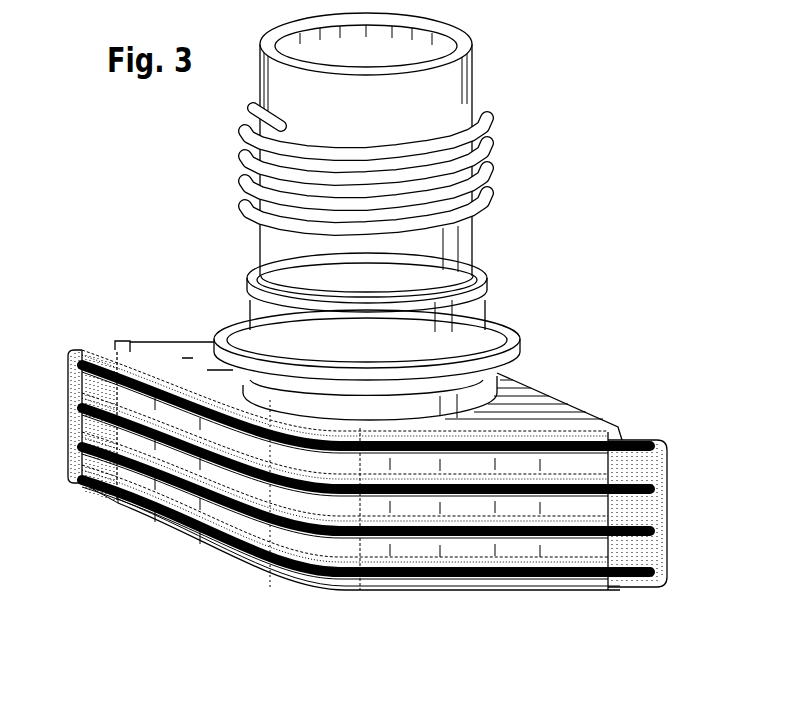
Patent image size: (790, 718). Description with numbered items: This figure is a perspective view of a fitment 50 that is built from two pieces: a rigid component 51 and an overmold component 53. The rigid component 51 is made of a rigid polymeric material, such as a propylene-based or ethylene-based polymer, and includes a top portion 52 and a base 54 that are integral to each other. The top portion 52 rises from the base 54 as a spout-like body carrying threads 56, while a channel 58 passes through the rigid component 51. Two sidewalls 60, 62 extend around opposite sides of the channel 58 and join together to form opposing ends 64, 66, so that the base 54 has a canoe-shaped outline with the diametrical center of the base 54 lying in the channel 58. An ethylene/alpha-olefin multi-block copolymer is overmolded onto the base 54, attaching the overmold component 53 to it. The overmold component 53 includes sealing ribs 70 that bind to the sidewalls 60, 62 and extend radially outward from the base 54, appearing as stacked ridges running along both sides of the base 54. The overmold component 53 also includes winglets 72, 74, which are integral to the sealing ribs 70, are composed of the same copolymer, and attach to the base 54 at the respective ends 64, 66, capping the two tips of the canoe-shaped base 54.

The fitment 50 is at (555, 152).
The rigid component 51 is at (535, 262).
The top portion 52 is at (488, 220).
The overmold component 53 is at (628, 430).
The base 54 is at (593, 392).
The threads 56 is at (237, 125).
The channel 58 is at (405, 50).
The sidewall 60 is at (127, 340).
The sidewall 62 is at (178, 340).
The end 64 is at (50, 477).
The end 66 is at (682, 567).
The sealing ribs 70 is at (533, 440).
The winglet 72 is at (75, 425).
The winglet 74 is at (667, 497).